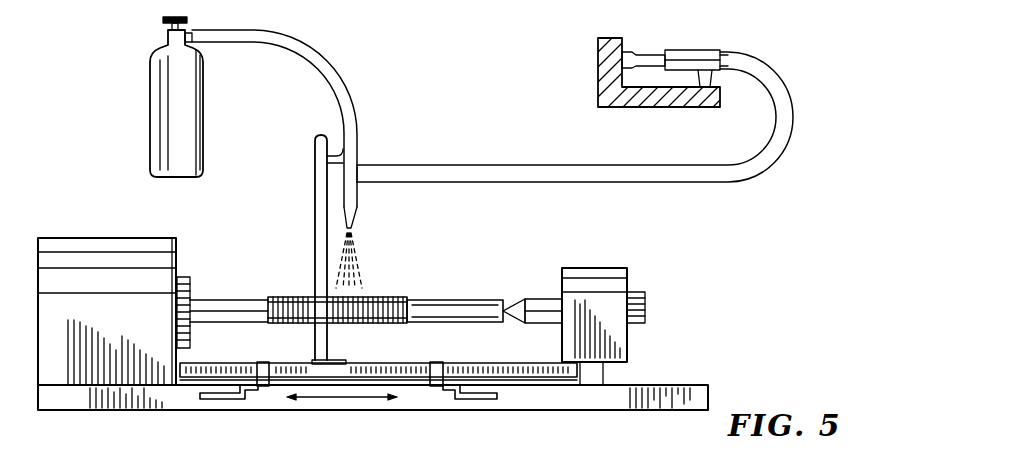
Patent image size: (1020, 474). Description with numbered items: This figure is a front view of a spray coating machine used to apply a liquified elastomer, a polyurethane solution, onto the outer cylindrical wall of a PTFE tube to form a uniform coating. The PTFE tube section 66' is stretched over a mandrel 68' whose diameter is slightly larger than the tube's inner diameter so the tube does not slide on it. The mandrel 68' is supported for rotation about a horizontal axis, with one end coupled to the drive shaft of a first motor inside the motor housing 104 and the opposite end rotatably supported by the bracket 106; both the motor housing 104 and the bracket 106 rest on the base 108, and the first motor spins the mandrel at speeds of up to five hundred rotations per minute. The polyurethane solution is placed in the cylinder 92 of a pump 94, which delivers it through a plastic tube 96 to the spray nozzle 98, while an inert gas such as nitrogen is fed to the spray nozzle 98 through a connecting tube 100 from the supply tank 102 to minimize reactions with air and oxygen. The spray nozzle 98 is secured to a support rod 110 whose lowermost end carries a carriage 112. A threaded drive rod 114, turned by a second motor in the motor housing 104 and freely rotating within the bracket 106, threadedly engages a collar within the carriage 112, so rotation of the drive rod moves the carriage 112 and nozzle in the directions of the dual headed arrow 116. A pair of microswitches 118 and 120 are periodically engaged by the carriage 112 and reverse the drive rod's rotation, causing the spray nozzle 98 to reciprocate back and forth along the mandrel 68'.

The PTFE tube section 66' is at (307, 292).
The mandrel 68' is at (455, 292).
The cylinder 92 is at (708, 48).
The pump 94 is at (671, 31).
The plastic tube 96 is at (468, 165).
The spray nozzle 98 is at (355, 190).
The connecting tube 100 is at (256, 43).
The supply tank 102 is at (157, 66).
The motor housing 104 is at (177, 238).
The bracket 106 is at (613, 268).
The base 108 is at (274, 411).
The support rod 110 is at (314, 196).
The carriage 112 is at (338, 361).
The threaded drive rod 114 is at (183, 364).
The dual headed arrow 116 is at (374, 400).
The microswitch 118 is at (272, 347).
The microswitch 120 is at (440, 363).